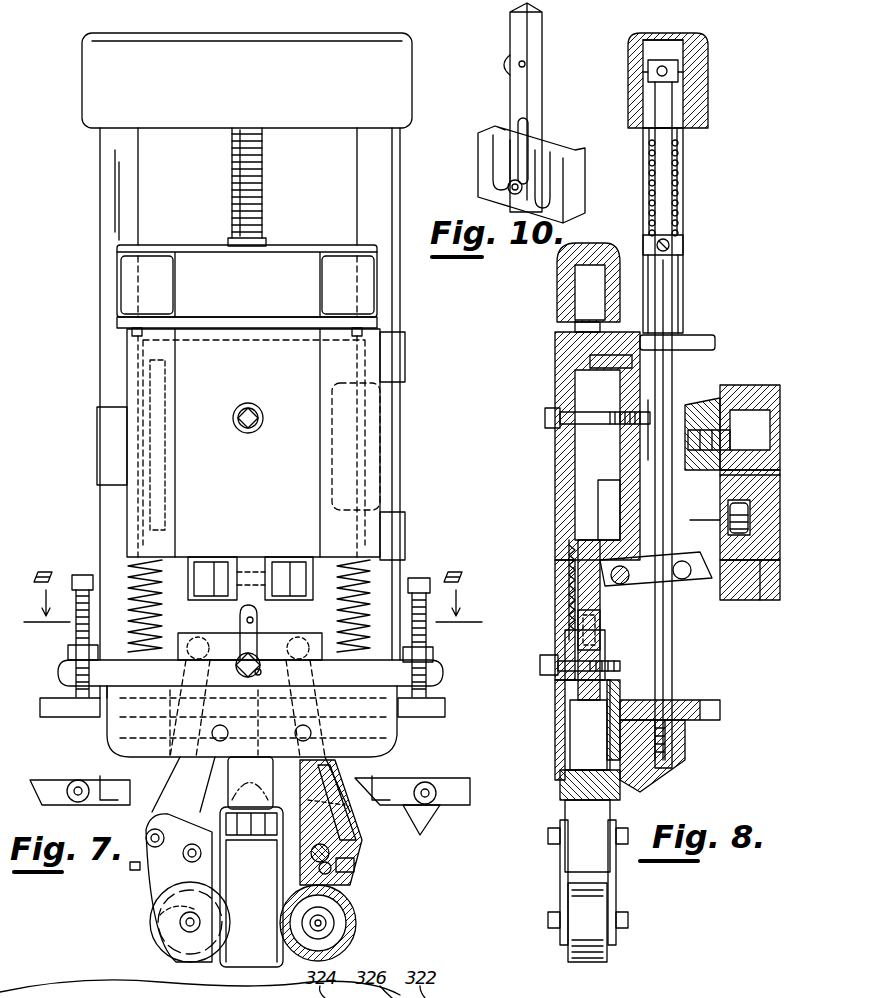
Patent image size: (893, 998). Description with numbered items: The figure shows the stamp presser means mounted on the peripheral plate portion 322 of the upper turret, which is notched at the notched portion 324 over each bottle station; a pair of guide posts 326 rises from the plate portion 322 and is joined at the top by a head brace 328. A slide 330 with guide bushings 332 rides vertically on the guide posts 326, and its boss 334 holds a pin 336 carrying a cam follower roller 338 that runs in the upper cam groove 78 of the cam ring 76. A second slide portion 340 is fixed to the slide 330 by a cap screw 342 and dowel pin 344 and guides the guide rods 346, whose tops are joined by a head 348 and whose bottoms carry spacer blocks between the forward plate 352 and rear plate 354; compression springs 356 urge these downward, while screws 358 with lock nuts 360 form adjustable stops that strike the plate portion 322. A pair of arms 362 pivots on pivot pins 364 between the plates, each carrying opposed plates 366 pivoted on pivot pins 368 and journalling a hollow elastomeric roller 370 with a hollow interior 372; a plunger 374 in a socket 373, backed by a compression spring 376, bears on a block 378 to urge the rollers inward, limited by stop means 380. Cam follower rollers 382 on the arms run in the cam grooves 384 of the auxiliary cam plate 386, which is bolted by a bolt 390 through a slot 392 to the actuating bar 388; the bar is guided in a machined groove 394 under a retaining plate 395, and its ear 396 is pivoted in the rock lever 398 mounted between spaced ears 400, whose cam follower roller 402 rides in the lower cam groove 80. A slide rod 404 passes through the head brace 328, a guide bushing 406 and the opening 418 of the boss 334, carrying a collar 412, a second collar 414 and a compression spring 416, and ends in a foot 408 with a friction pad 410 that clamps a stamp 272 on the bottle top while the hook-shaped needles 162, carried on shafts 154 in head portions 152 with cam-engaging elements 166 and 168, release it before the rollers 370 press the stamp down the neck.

In FIG. 7, the head brace 328 is at (348, 36).
In FIG. 8, the head brace 328 is at (708, 66).
In FIG. 7, the guide posts 326 is at (106, 207).
In FIG. 8, the guide posts 326 is at (683, 288).
In FIG. 7, the slide rod 404 is at (232, 152).
In FIG. 8, the slide rod 404 is at (672, 266).
In FIG. 7, the compression spring 416 is at (258, 196).
In FIG. 8, the compression spring 416 is at (678, 158).
In FIG. 7, the second collar 414 is at (230, 238).
In FIG. 8, the second collar 414 is at (680, 236).
In FIG. 7, the head 348 is at (295, 262).
In FIG. 8, the head 348 is at (557, 278).
In FIG. 7, the slide 330 is at (186, 328).
In FIG. 8, the slide 330 is at (690, 335).
In FIG. 7, the guide rods 346 is at (134, 330).
In FIG. 8, the guide rods 346 is at (580, 328).
In FIG. 7, the second slide portion 340 is at (253, 443).
In FIG. 8, the second slide portion 340 is at (555, 352).
In FIG. 7, the cap screw 342 is at (248, 404).
In FIG. 8, the cap screw 342 is at (548, 410).
In FIG. 7, the guide bushings 332 is at (97, 410).
In FIG. 7, the spaced ears 400 is at (202, 560).
In FIG. 8, the spaced ears 400 is at (750, 503).
In FIG. 7, the compression springs 356 is at (128, 568).
In FIG. 8, the compression springs 356 is at (568, 578).
In FIG. 7, the actuating bar 388 is at (240, 608).
In FIG. 10, the actuating bar 388 is at (536, 88).
In FIG. 8, the actuating bar 388 is at (578, 545).
In FIG. 7, the ear 396 is at (254, 620).
In FIG. 10, the ear 396 is at (508, 64).
In FIG. 8, the ear 396 is at (618, 586).
In FIG. 7, the bolt 390 is at (244, 655).
In FIG. 10, the bolt 390 is at (507, 186).
In FIG. 8, the bolt 390 is at (546, 655).
In FIG. 7, the auxiliary cam plate 386 is at (284, 640).
In FIG. 10, the auxiliary cam plate 386 is at (574, 178).
In FIG. 7, the cam follower rollers 382 is at (251, 659).
In FIG. 8, the cam follower rollers 382 is at (592, 638).
In FIG. 7, the peripheral plate portion 322 is at (420, 708).
In FIG. 8, the peripheral plate portion 322 is at (708, 720).
In FIG. 7, the notched portion 324 is at (108, 725).
In FIG. 7, the cam-engaging element 166 is at (58, 718).
In FIG. 7, the forward plate 352 is at (397, 724).
In FIG. 8, the forward plate 352 is at (555, 696).
In FIG. 7, the pivot pins 364 is at (220, 741).
In FIG. 7, the screws 358 is at (72, 628).
In FIG. 7, the lock nuts 360 is at (68, 652).
In FIG. 7, the head portions 152 is at (32, 784).
In FIG. 7, the shaft 154 is at (70, 802).
In FIG. 7, the hook-shaped needles 162 is at (100, 776).
In FIG. 7, the cam-engaging element 168 is at (422, 818).
In FIG. 7, the arms 362 is at (175, 780).
In FIG. 8, the arms 362 is at (580, 738).
In FIG. 7, the foot 408 is at (228, 780).
In FIG. 8, the foot 408 is at (648, 766).
In FIG. 7, the stamp 272 is at (214, 808).
In FIG. 7, the pivot pins 368 is at (300, 852).
In FIG. 8, the pivot pins 368 is at (548, 846).
In FIG. 7, the plates 366 is at (110, 862).
In FIG. 8, the plates 366 is at (560, 870).
In FIG. 7, the plunger 374 is at (158, 822).
In FIG. 7, the socket 373 is at (332, 766).
In FIG. 7, the compression spring 376 is at (347, 790).
In FIG. 7, the stop means 380 is at (128, 866).
In FIG. 7, the blocks 378 is at (334, 870).
In FIG. 7, the rollers 370 is at (150, 922).
In FIG. 8, the rollers 370 is at (600, 962).
In FIG. 7, the hollow interior 372 is at (336, 912).
In FIG. 10, the slot 392 is at (530, 122).
In FIG. 8, the slot 392 is at (580, 606).
In FIG. 10, the cam grooves 384 is at (496, 136).
In FIG. 8, the collar 412 is at (676, 60).
In FIG. 8, the dowel pin 344 is at (605, 370).
In FIG. 8, the opening 418 is at (667, 419).
In FIG. 8, the upper cam groove 78 is at (746, 400).
In FIG. 8, the boss 334 is at (696, 402).
In FIG. 8, the pin 336 is at (712, 452).
In FIG. 8, the cam follower roller 338 is at (750, 515).
In FIG. 8, the cam ring 76 is at (770, 555).
In FIG. 8, the guide bushing 406 is at (709, 508).
In FIG. 8, the cam follower roller 402 is at (742, 533).
In FIG. 8, the lower cam groove 80 is at (770, 602).
In FIG. 8, the rock lever 398 is at (696, 586).
In FIG. 8, the machined groove 394 is at (562, 510).
In FIG. 8, the retaining plate 395 is at (604, 484).
In FIG. 8, the rear plate 354 is at (608, 700).
In FIG. 8, the pad 410 is at (618, 797).